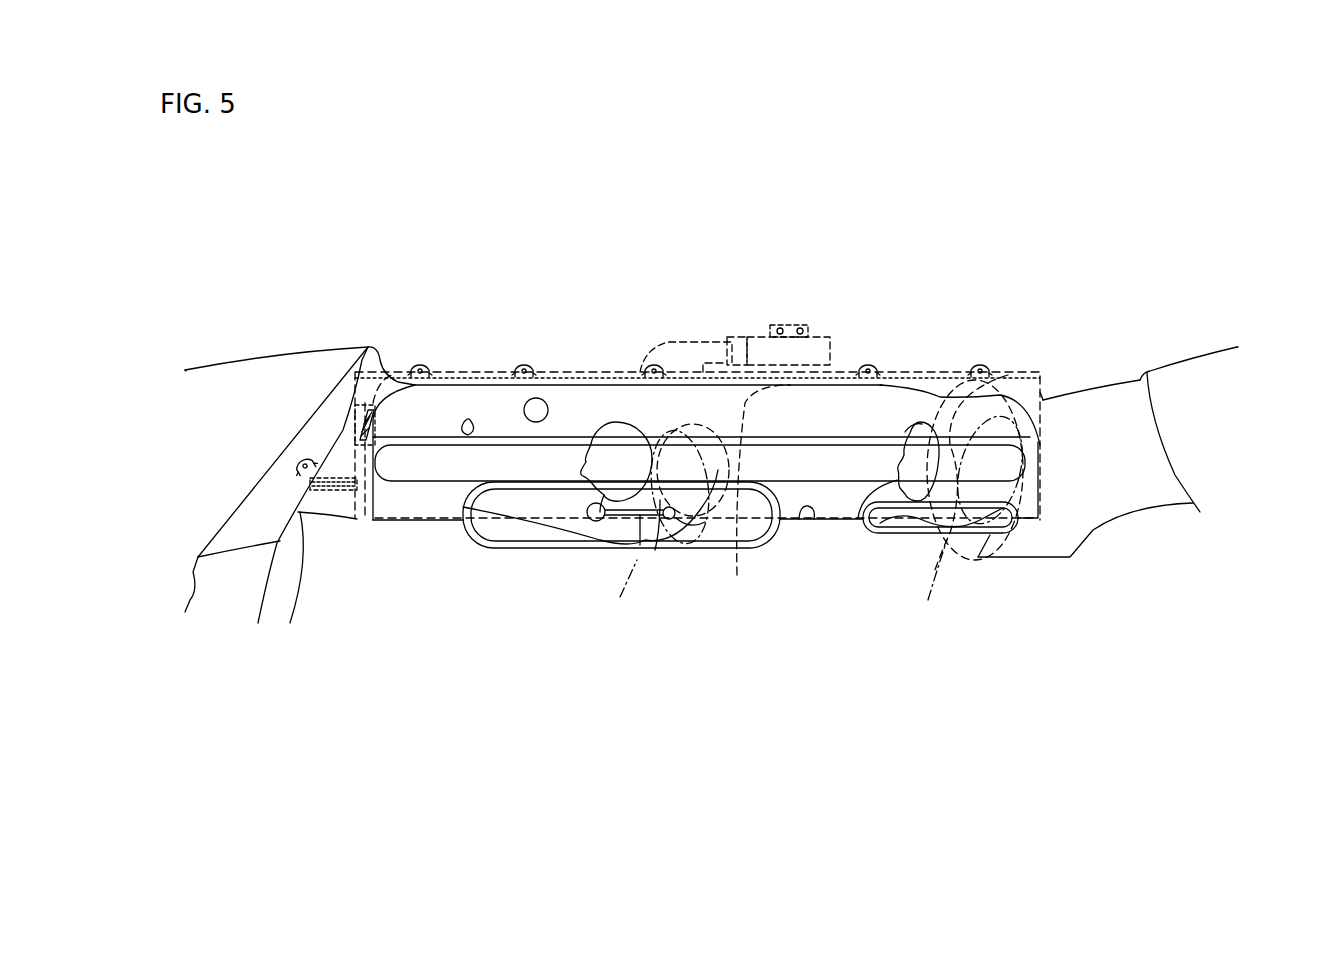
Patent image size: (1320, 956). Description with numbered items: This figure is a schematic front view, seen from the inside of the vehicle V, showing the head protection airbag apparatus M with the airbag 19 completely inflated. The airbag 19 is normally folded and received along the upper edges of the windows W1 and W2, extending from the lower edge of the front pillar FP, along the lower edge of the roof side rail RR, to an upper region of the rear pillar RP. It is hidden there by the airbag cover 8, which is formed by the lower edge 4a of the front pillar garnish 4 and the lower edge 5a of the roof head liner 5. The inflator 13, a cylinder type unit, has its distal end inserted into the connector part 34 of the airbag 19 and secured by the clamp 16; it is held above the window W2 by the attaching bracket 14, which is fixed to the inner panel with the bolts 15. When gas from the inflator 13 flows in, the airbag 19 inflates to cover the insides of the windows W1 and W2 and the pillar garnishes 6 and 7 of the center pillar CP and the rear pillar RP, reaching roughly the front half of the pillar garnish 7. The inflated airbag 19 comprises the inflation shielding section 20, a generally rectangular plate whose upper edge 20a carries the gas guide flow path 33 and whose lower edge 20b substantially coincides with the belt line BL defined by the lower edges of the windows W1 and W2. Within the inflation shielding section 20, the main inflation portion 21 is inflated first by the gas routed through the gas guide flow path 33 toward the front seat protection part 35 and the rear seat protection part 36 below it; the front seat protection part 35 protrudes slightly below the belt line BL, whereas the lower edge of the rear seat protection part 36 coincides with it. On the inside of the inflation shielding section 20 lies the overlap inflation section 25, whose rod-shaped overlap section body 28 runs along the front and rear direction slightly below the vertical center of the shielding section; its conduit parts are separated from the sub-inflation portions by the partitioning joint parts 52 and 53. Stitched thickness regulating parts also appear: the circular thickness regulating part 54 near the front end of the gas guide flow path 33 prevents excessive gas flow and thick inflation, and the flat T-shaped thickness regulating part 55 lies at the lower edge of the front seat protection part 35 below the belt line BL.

The front pillar garnish 4 is at (338, 402).
The lower edge of front pillar garnish 4a is at (363, 517).
The roof head liner 5 is at (604, 365).
The lower edge of roof head liner 5a is at (735, 385).
The pillar garnish of center pillar 6 is at (735, 453).
The pillar garnish of rear pillar 7 is at (1142, 408).
The airbag cover 8 is at (324, 472).
The inflator 13 is at (820, 322).
The attaching bracket 14 is at (777, 357).
The bolts 15 is at (802, 325).
The clamp 16 is at (733, 343).
The airbag 19 is at (1070, 512).
The inflation shielding section 20 is at (1045, 420).
The upper edge of inflation shielding section 20a is at (1008, 372).
The lower edge of inflation shielding section 20b is at (1010, 525).
The main inflation portion 21 is at (980, 504).
The overlap inflation section 25 is at (690, 521).
The overlap section body 28 is at (508, 498).
The gas guide flow path 33 is at (840, 378).
The connector part 34 is at (687, 342).
The front seat protection part 35 is at (584, 540).
The rear seat protection part 36 is at (930, 520).
The partitioning joint part 52 is at (432, 524).
The partitioning joint part 53 is at (846, 528).
The thickness regulating part 54 is at (537, 398).
The thickness regulating part 55 is at (645, 530).
The front pillar FP is at (253, 480).
The rear pillar RP is at (1167, 443).
The roof side rail RR is at (958, 362).
The belt line BL is at (286, 582).
The window W1 is at (327, 508).
The window W2 is at (822, 500).
The center pillar CP is at (760, 510).
The head protection airbag apparatus M is at (1067, 358).
The vehicle V is at (1138, 343).